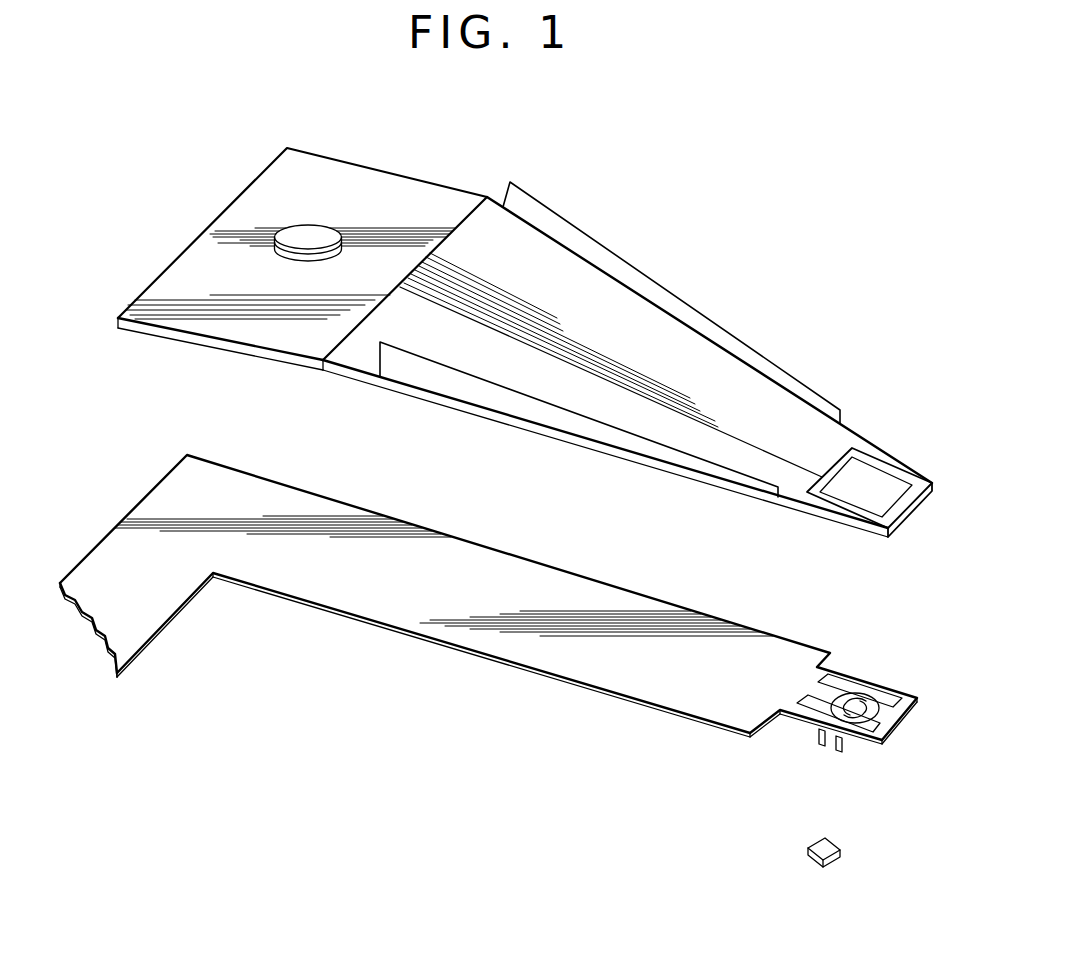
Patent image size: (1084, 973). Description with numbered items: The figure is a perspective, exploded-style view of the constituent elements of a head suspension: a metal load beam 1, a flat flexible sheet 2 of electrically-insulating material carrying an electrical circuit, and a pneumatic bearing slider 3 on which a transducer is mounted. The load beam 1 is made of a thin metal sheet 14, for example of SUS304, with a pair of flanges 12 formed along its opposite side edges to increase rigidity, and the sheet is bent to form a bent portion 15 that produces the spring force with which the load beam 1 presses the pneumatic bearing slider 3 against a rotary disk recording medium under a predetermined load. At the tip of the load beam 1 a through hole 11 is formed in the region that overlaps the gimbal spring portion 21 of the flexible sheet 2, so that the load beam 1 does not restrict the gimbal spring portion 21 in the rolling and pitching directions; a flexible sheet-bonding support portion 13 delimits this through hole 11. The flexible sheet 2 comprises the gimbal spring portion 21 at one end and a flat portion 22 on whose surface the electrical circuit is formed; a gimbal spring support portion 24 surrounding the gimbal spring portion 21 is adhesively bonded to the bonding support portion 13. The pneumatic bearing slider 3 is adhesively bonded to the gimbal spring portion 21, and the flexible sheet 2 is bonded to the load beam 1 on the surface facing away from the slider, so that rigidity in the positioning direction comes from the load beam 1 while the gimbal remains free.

The load beam 1 is at (531, 362).
The flexible sheet 2 is at (509, 603).
The pneumatic bearing slider 3 is at (838, 842).
The through hole 11 is at (870, 478).
The flanges 12 is at (638, 272).
The flexible sheet-bonding support portion 13 is at (870, 525).
The thin metal sheet 14 is at (710, 360).
The bent portion 15 is at (462, 200).
The gimbal spring portion 21 is at (888, 700).
The flat portion 22 is at (420, 624).
The gimbal spring support portion 24 is at (858, 690).